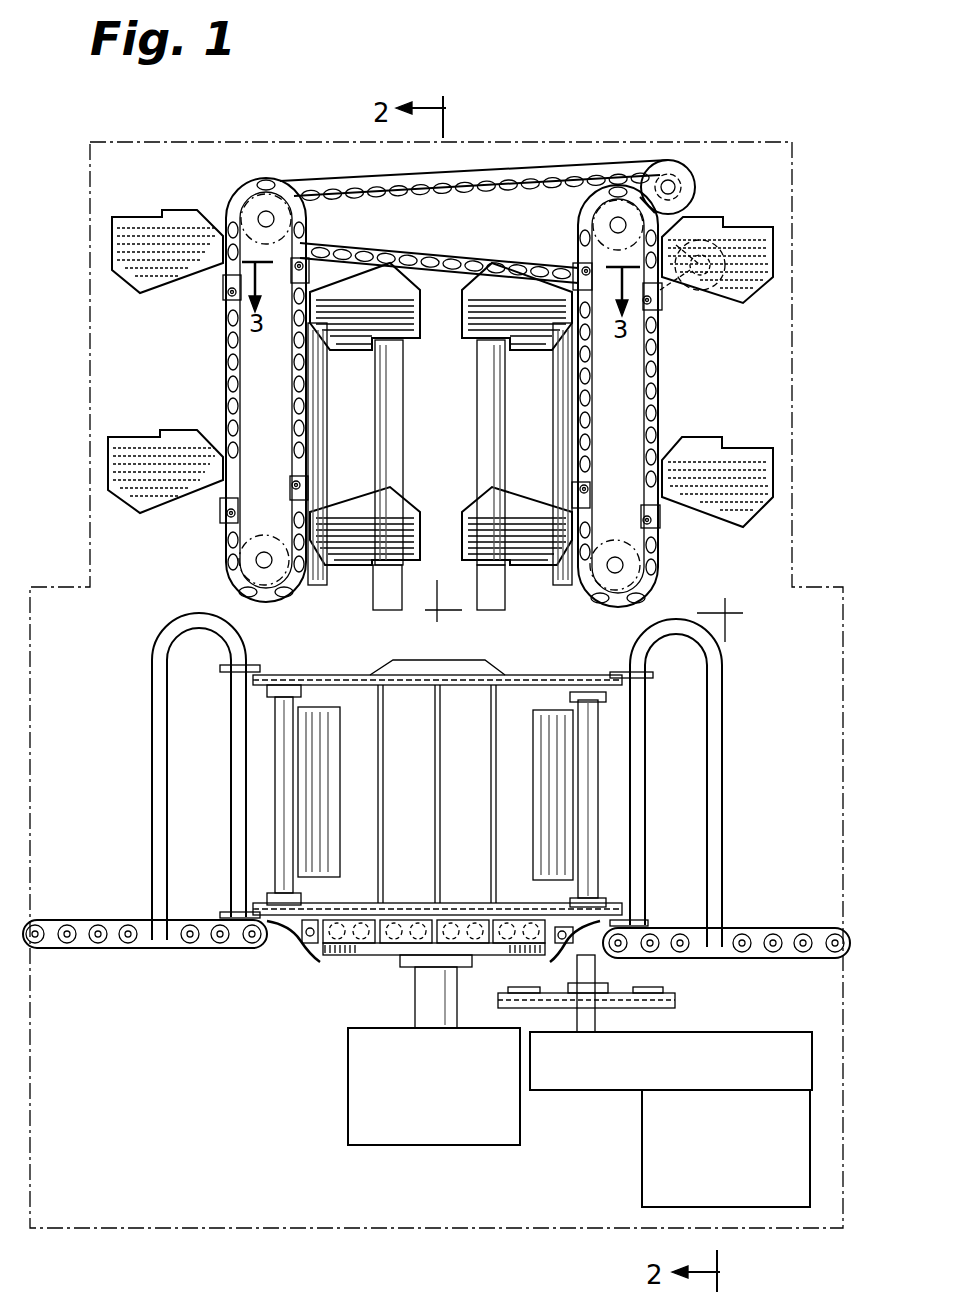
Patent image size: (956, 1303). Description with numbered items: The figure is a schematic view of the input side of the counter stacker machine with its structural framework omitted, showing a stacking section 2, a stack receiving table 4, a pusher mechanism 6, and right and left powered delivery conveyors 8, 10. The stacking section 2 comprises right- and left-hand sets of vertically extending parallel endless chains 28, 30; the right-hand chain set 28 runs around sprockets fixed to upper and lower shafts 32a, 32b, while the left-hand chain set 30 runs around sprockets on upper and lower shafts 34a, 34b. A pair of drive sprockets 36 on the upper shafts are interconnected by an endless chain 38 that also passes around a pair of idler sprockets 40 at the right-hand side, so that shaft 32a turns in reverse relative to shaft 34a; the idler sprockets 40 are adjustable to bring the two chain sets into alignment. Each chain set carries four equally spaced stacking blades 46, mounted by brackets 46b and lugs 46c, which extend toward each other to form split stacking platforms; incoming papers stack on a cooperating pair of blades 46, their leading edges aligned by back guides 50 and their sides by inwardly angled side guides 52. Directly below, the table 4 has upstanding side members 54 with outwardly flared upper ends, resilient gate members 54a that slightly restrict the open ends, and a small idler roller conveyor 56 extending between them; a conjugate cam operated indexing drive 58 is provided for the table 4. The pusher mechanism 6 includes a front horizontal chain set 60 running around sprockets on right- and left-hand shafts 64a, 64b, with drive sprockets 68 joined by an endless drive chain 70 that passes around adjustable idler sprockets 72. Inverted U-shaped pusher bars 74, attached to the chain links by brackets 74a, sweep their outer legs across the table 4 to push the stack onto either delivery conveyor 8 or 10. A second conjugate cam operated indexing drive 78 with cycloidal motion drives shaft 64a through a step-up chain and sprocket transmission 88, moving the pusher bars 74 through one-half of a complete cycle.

The stacking section 2 is at (446, 447).
The stack receiving table 4 is at (474, 767).
The pusher mechanism 6 is at (297, 662).
The right delivery conveyor 8 is at (786, 903).
The left delivery conveyor 10 is at (80, 895).
The right-hand chain set 28 is at (656, 380).
The left-hand chain set 30 is at (228, 396).
The upper shaft 32a is at (610, 226).
The lower shaft 32b is at (624, 565).
The upper shaft 34a is at (276, 222).
The lower shaft 34b is at (256, 560).
The drive sprockets 36 is at (270, 200).
The endless chain 38 is at (525, 168).
The idler sprockets 40 is at (676, 166).
The stacking blades 46 is at (112, 243).
The bin bracket 46b is at (293, 483).
The bin mounting lug 46c is at (300, 335).
The back guides 50 is at (373, 600).
The side guides 52 is at (326, 402).
The side members 54 is at (488, 672).
The gate members 54a is at (338, 732).
The idler roller conveyor 56 is at (308, 952).
The conjugate cam operated indexing drive 58 is at (348, 1040).
The front chain set 60 is at (575, 674).
The right-hand shaft 64a is at (595, 785).
The left-hand shaft 64b is at (280, 772).
The drive sprockets 68 is at (598, 990).
The endless drive chain 70 is at (676, 1006).
The idler sprockets 72 is at (512, 989).
The pusher bars 74 is at (152, 652).
The brackets 74a is at (228, 674).
The conjugate cam operated indexing drive 78 is at (642, 1157).
The transmission 88 is at (792, 1032).